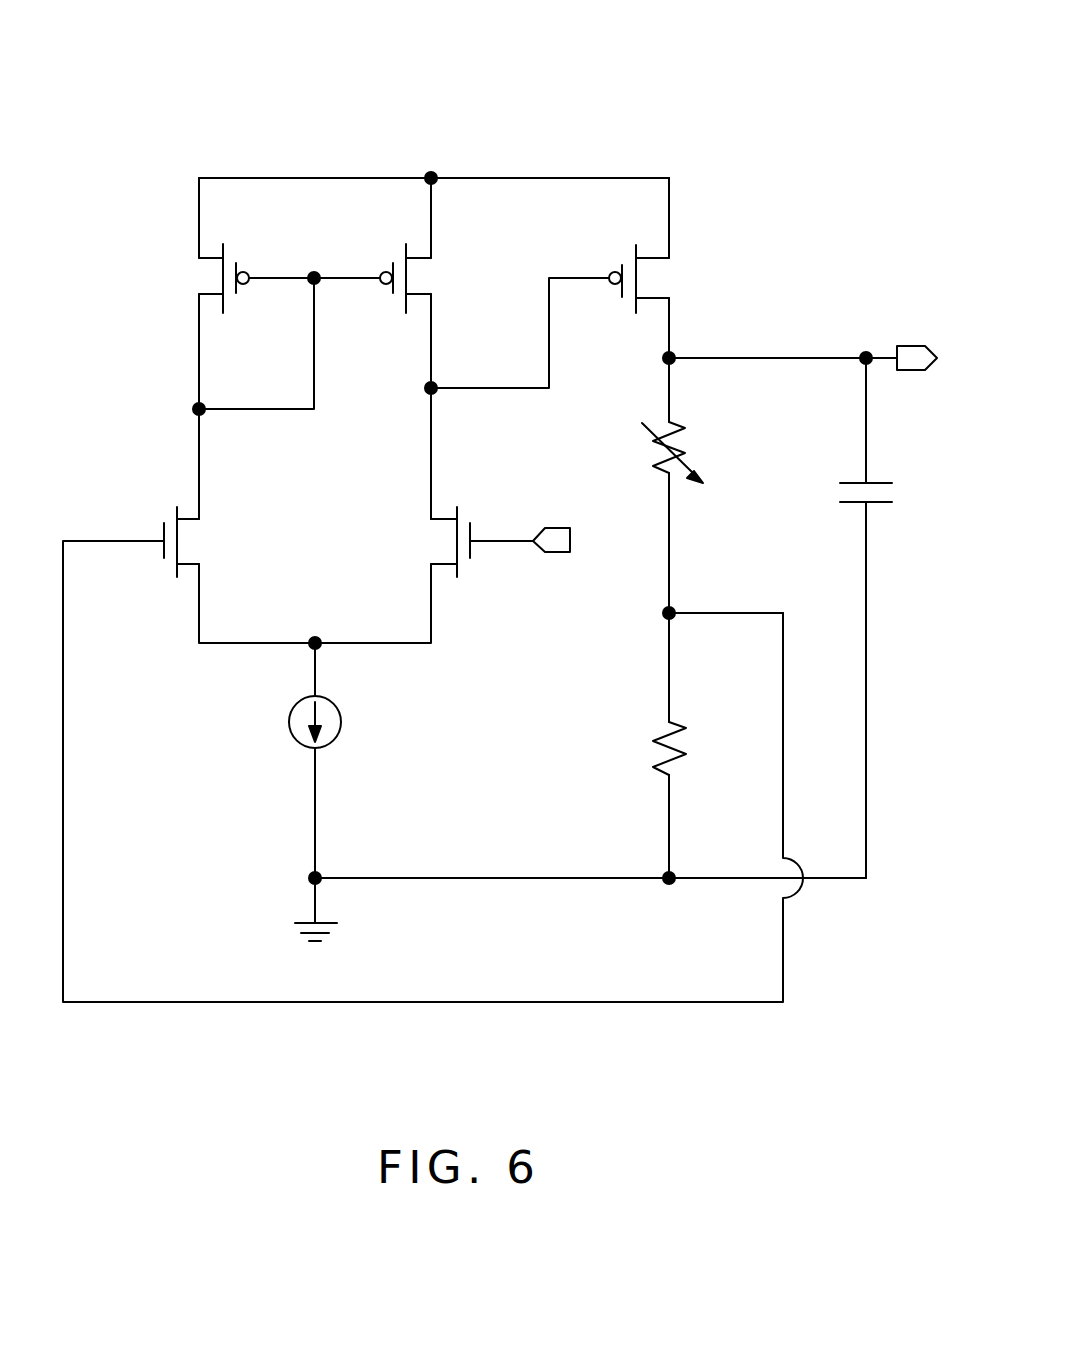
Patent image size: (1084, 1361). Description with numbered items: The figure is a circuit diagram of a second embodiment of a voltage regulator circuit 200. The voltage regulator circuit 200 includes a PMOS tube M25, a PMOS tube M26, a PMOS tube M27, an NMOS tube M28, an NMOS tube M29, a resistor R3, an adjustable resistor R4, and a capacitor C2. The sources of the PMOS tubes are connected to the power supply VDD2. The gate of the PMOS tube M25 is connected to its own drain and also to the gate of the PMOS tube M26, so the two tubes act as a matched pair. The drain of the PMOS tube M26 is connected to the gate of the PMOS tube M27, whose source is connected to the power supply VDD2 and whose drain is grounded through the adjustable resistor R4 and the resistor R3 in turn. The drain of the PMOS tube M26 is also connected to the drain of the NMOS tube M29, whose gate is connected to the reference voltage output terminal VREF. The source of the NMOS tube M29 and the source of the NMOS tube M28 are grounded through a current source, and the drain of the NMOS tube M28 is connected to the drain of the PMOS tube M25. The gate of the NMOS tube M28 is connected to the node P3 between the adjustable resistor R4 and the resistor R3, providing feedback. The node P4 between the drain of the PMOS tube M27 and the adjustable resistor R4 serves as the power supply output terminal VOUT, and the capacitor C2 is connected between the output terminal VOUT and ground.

The voltage regulator circuit 200 is at (333, 43).
The power supply VDD2 is at (428, 159).
The PMOS tube M25 is at (198, 278).
The PMOS tube M26 is at (436, 278).
The PMOS tube M27 is at (668, 279).
The NMOS tube M28 is at (211, 542).
The NMOS tube M29 is at (457, 542).
The reference voltage output terminal VREF is at (565, 520).
The power supply output terminal VOUT is at (900, 338).
The node P4 is at (751, 360).
The node P3 is at (694, 618).
The adjustable resistor R4 is at (650, 452).
The resistor R3 is at (645, 748).
The capacitor C2 is at (837, 492).